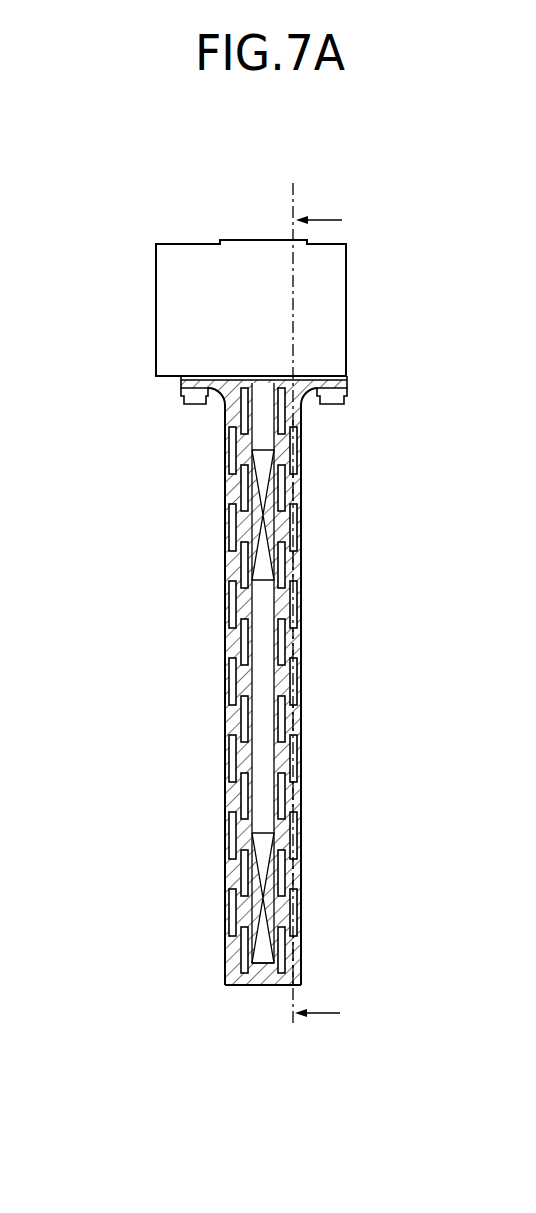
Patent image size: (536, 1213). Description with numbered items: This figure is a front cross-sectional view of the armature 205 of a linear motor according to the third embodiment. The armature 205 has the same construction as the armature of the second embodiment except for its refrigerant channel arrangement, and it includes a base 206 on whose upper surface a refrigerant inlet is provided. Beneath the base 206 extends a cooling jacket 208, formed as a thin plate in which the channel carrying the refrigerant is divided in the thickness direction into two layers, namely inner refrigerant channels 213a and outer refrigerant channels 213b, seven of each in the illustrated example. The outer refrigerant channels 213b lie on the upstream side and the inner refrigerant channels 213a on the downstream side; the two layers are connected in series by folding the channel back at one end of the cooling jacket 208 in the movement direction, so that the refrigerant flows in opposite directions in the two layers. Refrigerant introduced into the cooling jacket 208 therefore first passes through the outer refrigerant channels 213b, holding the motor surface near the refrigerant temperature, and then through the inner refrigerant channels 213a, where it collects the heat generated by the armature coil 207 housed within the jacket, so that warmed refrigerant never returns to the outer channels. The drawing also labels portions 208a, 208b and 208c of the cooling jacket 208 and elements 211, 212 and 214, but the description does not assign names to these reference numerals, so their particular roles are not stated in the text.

The armature 205 is at (166, 216).
The base 206 is at (156, 288).
The armature coil 207 is at (263, 845).
The cooling jacket 208 is at (214, 957).
The tube right wall 208a is at (303, 563).
The tube bottom end 208b is at (253, 987).
The tube left wall 208c is at (225, 563).
The plate 211 is at (197, 380).
The terminal block 212 is at (193, 407).
The inner refrigerant channels 213a is at (238, 637).
The outer refrigerant channels 213b is at (230, 678).
The center passage 214 is at (265, 723).